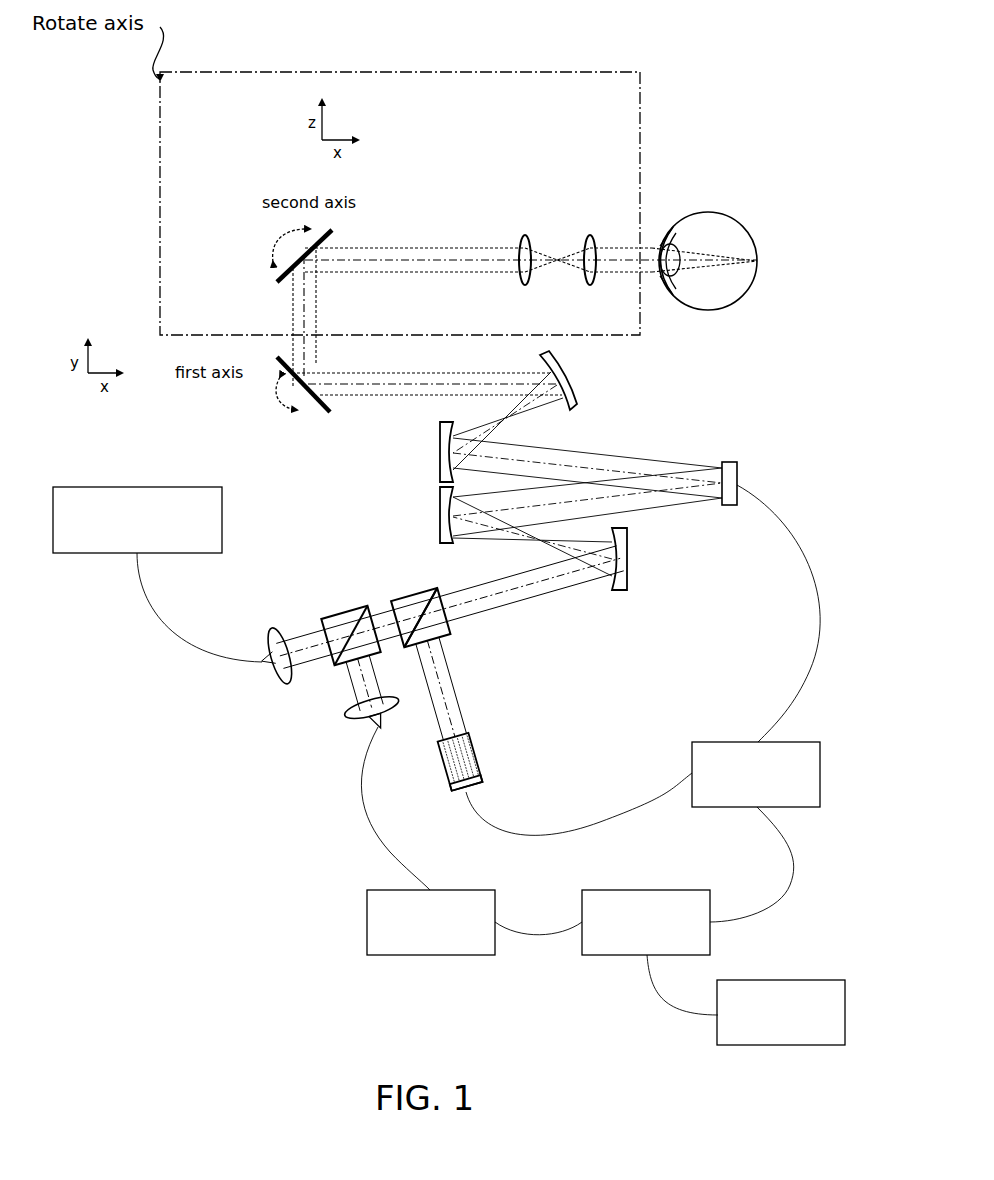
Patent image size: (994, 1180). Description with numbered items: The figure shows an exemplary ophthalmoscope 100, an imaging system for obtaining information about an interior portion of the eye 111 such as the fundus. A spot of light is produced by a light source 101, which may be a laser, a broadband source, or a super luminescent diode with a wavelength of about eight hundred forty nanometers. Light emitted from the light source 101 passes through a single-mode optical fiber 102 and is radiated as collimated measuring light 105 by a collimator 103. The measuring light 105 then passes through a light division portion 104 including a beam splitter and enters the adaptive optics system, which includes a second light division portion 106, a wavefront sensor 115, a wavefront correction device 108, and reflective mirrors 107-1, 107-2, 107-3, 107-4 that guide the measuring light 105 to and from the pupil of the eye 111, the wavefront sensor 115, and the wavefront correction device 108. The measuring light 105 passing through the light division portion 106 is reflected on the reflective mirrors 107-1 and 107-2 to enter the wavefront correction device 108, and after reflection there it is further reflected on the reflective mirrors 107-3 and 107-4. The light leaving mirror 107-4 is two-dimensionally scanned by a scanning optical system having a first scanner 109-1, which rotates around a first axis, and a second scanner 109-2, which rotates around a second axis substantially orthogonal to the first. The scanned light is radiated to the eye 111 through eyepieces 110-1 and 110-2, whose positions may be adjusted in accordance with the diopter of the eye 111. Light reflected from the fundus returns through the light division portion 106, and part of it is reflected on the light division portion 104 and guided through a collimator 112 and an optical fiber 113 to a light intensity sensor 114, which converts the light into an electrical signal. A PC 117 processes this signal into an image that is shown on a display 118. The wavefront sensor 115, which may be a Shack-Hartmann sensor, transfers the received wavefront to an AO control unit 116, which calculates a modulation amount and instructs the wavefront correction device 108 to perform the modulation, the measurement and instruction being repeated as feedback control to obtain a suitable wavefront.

The ophthalmoscope 100 is at (122, 1014).
The light source 101 is at (137, 520).
The single-mode optical fiber 102 is at (163, 633).
The collimator 103 is at (288, 683).
The light division portion 104 is at (320, 618).
The measuring light 105 is at (397, 606).
The light division portion 106 is at (450, 636).
The reflective mirror 107-1 is at (627, 580).
The reflective mirror 107-2 is at (437, 506).
The reflective mirror 107-3 is at (437, 456).
The reflective mirror 107-4 is at (571, 407).
The wavefront correction device 108 is at (726, 462).
The first scanner 109-1 is at (278, 360).
The second scanner 109-2 is at (276, 283).
The eyepiece 110-1 is at (523, 237).
The eyepiece 110-2 is at (589, 235).
The eye 111 is at (712, 211).
The collimator 112 is at (343, 716).
The optical fiber 113 is at (372, 833).
The light intensity sensor 114 is at (431, 922).
The wavefront sensor 115 is at (478, 745).
The AO control unit 116 is at (756, 774).
The PC 117 is at (646, 922).
The display 118 is at (781, 1012).